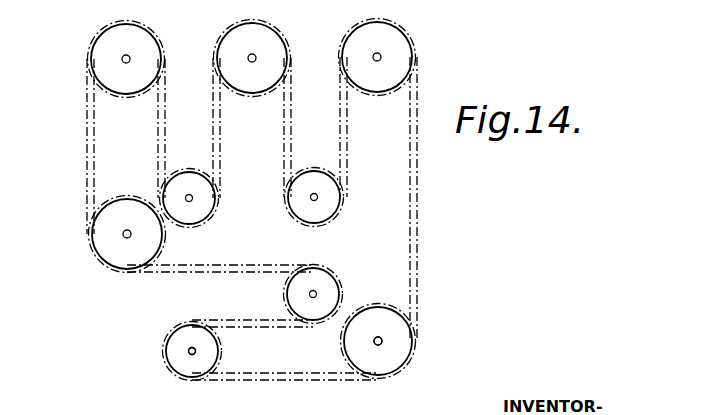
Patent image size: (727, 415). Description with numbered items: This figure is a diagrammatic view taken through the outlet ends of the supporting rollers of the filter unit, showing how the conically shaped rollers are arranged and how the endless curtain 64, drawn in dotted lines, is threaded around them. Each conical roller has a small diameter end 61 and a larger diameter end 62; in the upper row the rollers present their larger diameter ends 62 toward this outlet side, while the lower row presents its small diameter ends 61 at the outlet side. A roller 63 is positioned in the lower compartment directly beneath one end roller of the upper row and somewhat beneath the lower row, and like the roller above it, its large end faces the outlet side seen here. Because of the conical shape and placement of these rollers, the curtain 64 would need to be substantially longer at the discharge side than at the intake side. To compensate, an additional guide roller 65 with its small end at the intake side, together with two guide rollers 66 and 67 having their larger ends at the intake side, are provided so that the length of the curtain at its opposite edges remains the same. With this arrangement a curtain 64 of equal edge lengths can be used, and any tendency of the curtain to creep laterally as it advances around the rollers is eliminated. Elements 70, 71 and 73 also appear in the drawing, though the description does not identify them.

The small diameter end 61 is at (303, 182).
The larger diameter end 62 is at (102, 50).
The roller 63 is at (117, 250).
The endless curtain 64 is at (417, 197).
The guide roller 65 is at (397, 313).
The guide roller 66 is at (288, 305).
The guide roller 67 is at (168, 335).
The pulley 70 is at (327, 290).
The pulley shaft 71 is at (200, 360).
The pulley shaft 73 is at (358, 345).